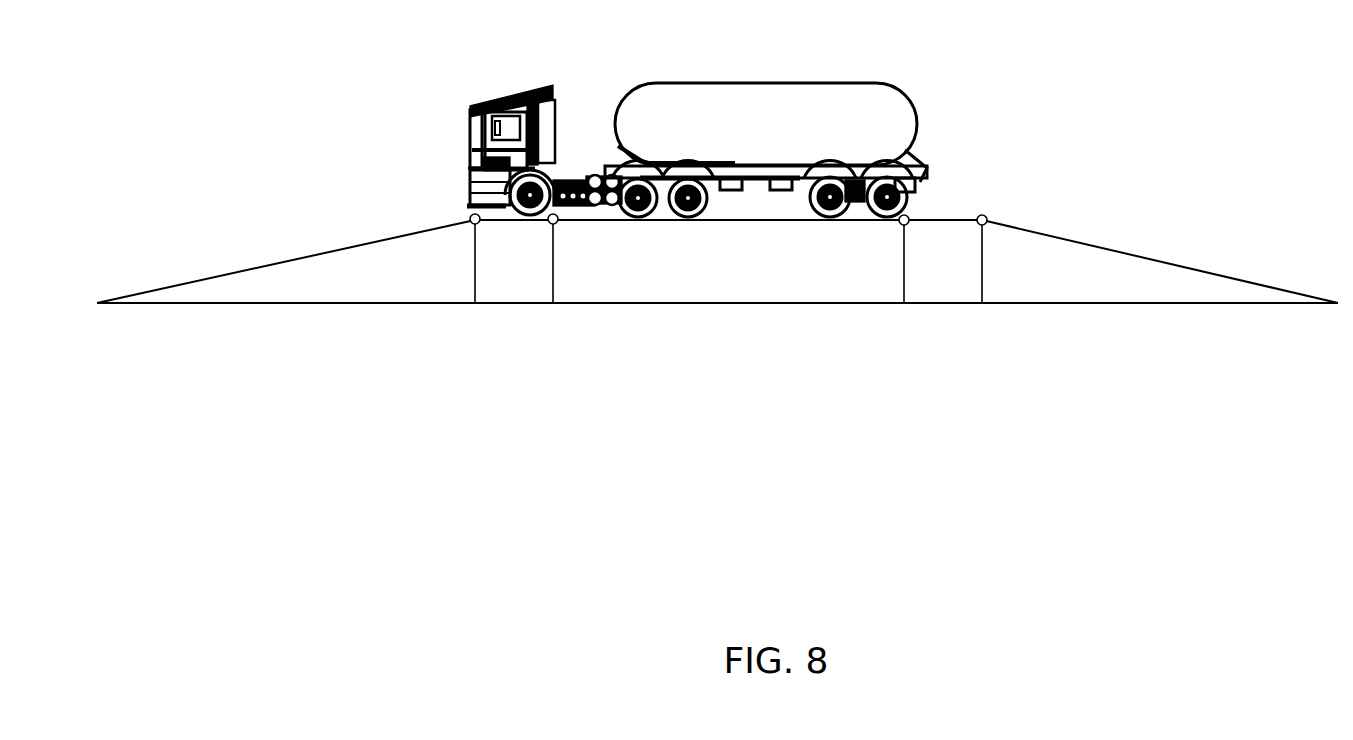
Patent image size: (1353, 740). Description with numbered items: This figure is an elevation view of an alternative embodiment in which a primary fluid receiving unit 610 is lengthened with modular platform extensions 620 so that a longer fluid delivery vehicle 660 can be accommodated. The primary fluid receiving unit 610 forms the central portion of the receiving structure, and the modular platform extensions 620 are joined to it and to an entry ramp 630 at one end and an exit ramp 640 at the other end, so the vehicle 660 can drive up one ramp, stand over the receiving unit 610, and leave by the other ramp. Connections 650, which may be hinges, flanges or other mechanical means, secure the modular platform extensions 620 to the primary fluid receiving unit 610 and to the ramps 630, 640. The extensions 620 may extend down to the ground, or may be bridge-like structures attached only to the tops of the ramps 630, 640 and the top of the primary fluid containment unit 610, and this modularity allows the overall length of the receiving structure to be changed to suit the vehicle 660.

The primary fluid receiving unit 610 is at (727, 282).
The modular platform extension 620 is at (470, 190).
The entry ramp 630 is at (1093, 258).
The exit ramp 640 is at (365, 258).
The connections 650 is at (553, 224).
The fluid delivery vehicle 660 is at (762, 83).